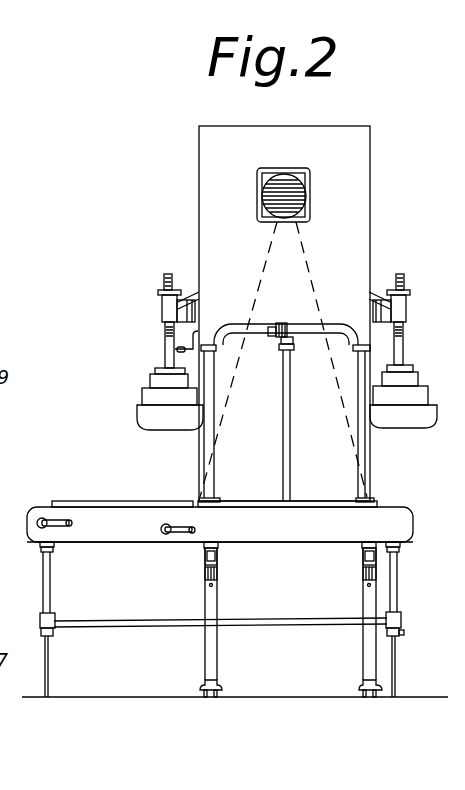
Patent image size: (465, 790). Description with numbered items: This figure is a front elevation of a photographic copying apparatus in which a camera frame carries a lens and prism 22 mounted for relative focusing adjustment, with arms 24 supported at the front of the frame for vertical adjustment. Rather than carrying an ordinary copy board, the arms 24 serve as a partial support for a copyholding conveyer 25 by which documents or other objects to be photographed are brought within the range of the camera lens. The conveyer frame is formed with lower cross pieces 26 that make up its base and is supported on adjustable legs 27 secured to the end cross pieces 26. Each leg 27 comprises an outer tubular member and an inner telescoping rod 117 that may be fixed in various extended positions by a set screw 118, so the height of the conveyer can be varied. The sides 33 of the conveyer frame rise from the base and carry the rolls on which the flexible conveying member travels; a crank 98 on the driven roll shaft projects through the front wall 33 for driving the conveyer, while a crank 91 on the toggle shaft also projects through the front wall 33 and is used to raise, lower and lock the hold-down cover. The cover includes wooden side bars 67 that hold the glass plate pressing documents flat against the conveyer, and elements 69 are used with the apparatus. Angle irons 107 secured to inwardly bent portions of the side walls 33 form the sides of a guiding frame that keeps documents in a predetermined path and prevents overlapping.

The lens and prism 22 is at (293, 201).
The arms 24 is at (218, 551).
The copyholding conveyer 25 is at (407, 520).
The lower cross pieces 26 is at (216, 543).
The adjustable legs 27 is at (50, 588).
The sides of the conveyer frame 33 is at (137, 525).
The side bars 67 is at (316, 499).
The elements 69 is at (141, 410).
The crank 91 is at (177, 524).
The crank 98 is at (48, 521).
The angle irons 107 is at (131, 507).
The inner telescoping rod 117 is at (50, 660).
The set screw 118 is at (38, 635).